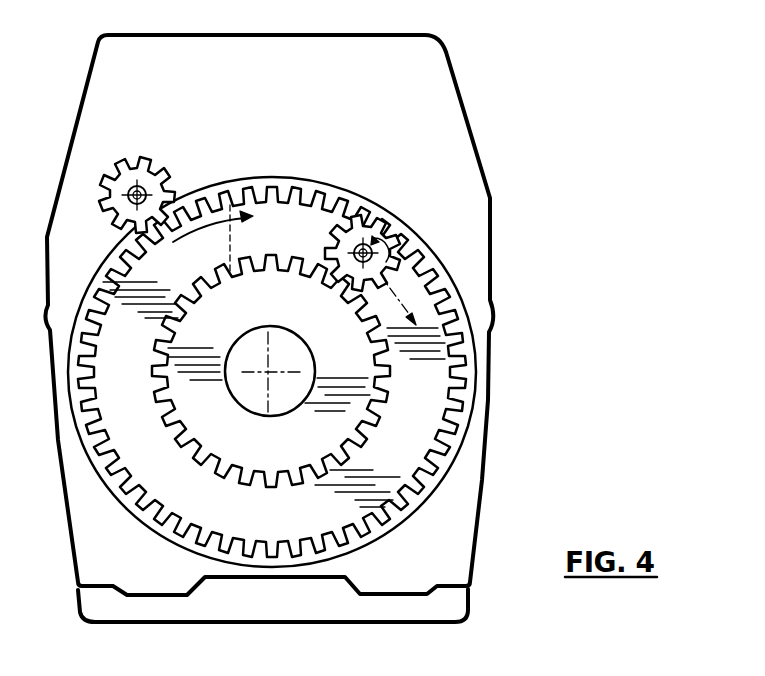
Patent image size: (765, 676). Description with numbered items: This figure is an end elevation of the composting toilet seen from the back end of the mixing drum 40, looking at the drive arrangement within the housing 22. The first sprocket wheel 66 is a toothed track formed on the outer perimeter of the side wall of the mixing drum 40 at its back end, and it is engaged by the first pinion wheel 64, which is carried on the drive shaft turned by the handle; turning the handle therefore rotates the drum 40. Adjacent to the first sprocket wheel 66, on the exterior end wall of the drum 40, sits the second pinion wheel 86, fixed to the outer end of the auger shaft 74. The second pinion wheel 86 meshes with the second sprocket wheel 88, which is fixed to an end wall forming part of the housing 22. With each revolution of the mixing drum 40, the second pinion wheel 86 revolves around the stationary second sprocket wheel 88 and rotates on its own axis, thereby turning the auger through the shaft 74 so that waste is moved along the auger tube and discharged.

The housing 22 is at (467, 106).
The mixing drum 40 is at (350, 553).
The first pinion wheel 64 is at (153, 168).
The first sprocket wheel 66 is at (271, 178).
The shaft 74 is at (372, 253).
The second pinion wheel 86 is at (330, 238).
The second sprocket wheel 88 is at (376, 436).